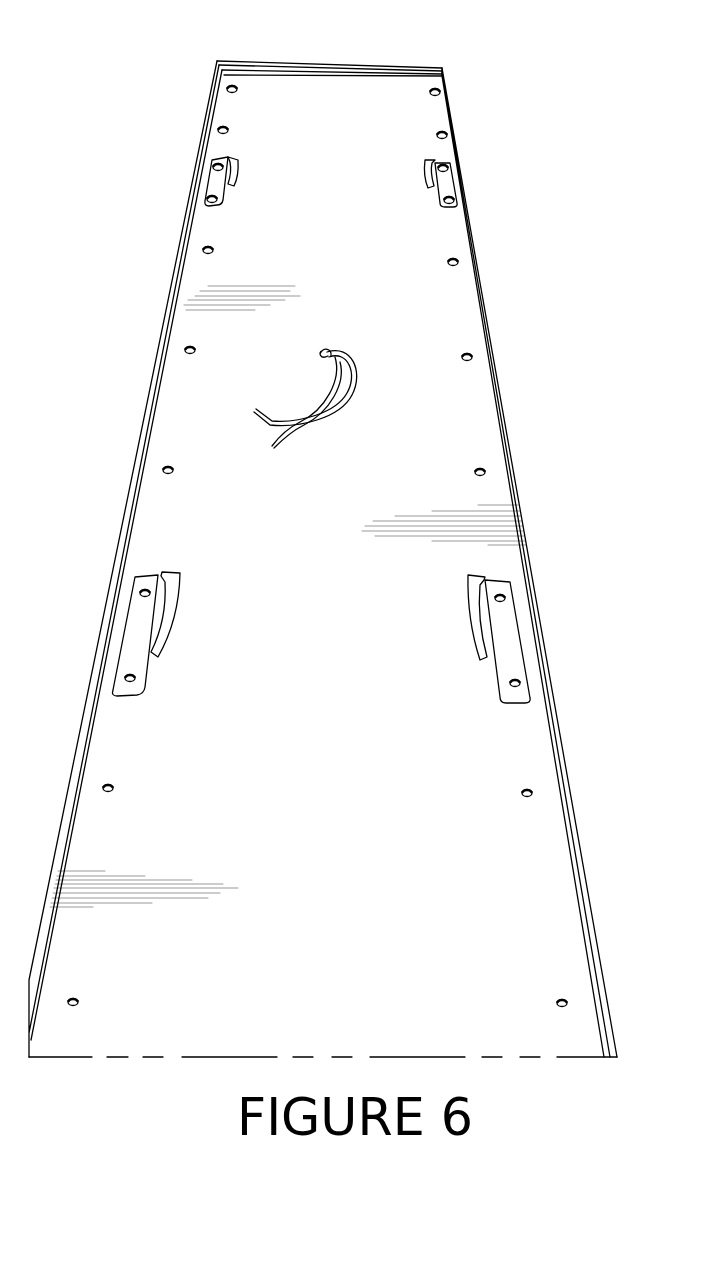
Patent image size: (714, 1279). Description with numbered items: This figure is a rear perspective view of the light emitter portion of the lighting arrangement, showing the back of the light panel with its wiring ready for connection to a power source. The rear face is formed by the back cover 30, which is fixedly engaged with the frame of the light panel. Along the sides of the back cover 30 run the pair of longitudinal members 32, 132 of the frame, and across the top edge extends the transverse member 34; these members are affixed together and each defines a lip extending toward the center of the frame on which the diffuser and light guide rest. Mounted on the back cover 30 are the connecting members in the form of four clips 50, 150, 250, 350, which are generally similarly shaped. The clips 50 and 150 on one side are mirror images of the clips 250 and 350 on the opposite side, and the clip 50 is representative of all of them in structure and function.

The back cover 30 is at (328, 898).
The longitudinal member 32 is at (485, 313).
The transverse member 34 is at (350, 66).
The longitudinal member 132 is at (185, 213).
The clip 50 is at (196, 581).
The clip 150 is at (247, 162).
The clip 250 is at (427, 207).
The clip 350 is at (489, 700).